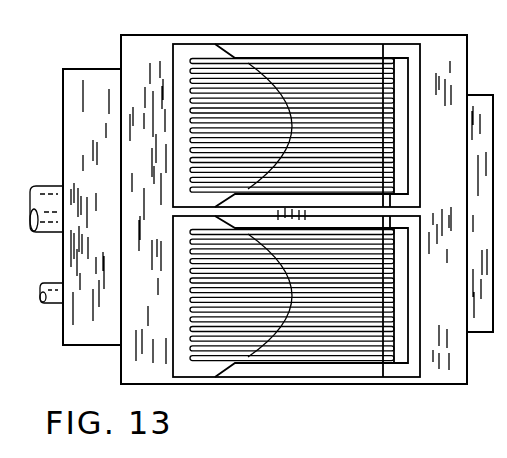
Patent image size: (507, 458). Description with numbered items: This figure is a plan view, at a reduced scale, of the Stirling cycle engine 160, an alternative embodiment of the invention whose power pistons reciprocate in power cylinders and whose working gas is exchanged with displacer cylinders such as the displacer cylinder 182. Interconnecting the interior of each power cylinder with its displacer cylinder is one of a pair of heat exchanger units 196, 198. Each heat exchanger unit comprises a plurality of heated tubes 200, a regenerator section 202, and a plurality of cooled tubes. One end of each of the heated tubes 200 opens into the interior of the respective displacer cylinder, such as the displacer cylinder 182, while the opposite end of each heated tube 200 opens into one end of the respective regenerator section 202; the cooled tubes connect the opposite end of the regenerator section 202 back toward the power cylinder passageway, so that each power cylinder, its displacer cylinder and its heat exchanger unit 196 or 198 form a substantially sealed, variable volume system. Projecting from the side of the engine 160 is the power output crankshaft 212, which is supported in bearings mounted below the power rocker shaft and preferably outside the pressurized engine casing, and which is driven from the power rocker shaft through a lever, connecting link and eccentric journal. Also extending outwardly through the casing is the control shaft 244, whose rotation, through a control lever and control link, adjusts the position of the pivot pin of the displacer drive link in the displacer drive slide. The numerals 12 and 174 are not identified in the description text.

The fuel cell stack assembly 12 is at (236, 263).
The Stirling cycle engine 160 is at (233, 392).
The end plate 174 is at (506, 72).
The displacer cylinder 182 is at (487, 175).
The heat exchanger unit 196 is at (428, 383).
The heat exchanger unit 198 is at (426, 56).
The heated tubes 200 is at (322, 81).
The regenerator section 202 is at (425, 117).
The power output crankshaft 212 is at (47, 234).
The control shaft 244 is at (55, 305).